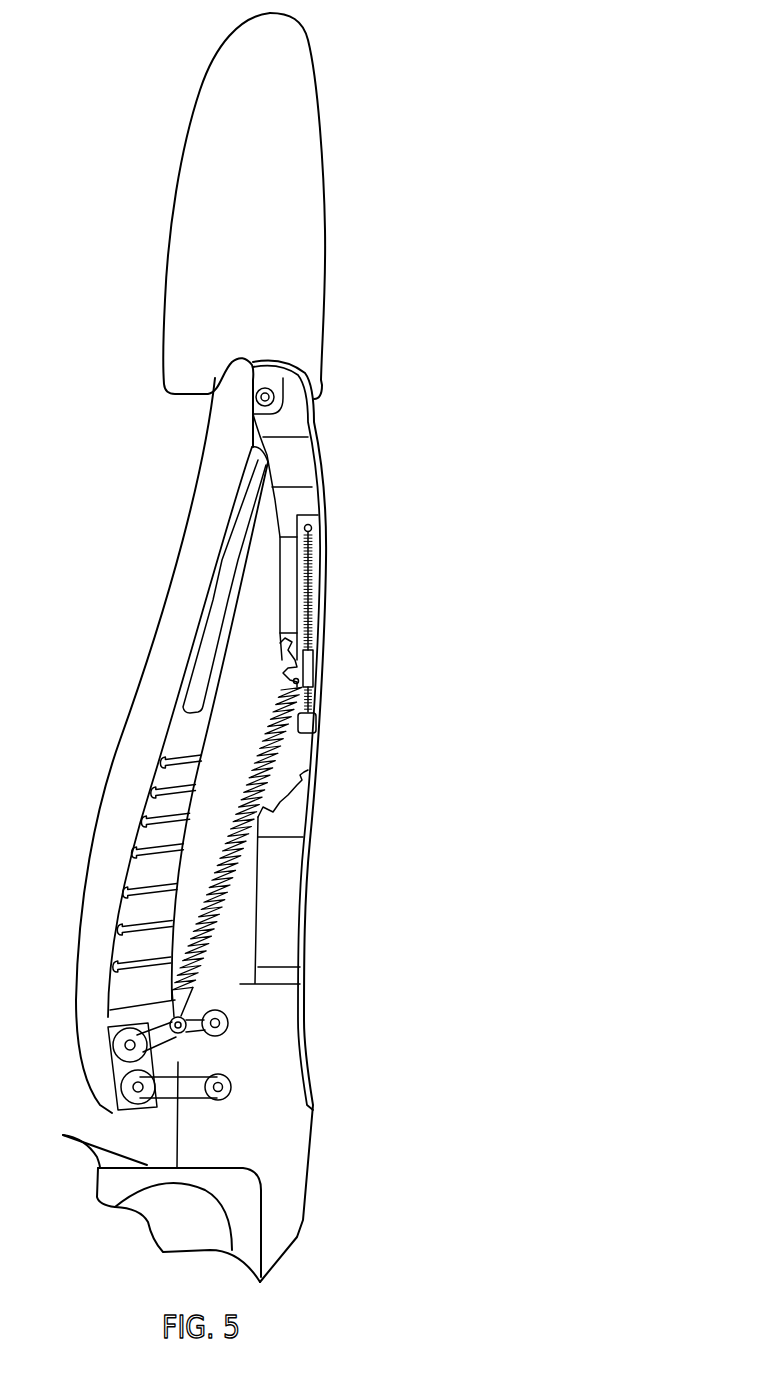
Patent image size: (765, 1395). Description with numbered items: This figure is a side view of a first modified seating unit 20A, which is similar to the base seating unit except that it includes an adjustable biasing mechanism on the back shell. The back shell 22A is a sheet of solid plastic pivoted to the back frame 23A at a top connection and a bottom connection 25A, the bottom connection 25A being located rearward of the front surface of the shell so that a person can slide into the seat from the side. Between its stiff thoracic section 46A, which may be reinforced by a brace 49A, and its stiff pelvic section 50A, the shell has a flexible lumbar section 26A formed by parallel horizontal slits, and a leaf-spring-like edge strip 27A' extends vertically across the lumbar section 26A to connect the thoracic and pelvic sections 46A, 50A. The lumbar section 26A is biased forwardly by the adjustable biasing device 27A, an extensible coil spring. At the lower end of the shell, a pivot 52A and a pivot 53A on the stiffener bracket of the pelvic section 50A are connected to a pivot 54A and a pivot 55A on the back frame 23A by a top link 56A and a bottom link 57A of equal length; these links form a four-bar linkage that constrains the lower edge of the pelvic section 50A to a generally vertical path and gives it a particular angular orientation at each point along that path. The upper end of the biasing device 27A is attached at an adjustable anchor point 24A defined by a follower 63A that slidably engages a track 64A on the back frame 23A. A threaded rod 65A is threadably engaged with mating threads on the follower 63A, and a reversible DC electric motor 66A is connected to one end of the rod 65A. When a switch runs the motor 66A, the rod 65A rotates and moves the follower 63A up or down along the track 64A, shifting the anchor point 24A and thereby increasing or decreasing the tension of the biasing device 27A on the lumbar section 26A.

The seating unit 20A is at (128, 593).
The back shell 22A is at (174, 750).
The back frame 23A is at (324, 427).
The adjustable anchor point 24A is at (272, 390).
The bottom connection 25A is at (265, 1063).
The lumbar section 26A is at (155, 838).
The adjustable biasing device 27A is at (287, 852).
The edge strip 27A' is at (267, 656).
The thoracic section 46A is at (250, 567).
The brace 49A is at (195, 684).
The pelvic section 50A is at (104, 1070).
The pivot 52A is at (128, 1028).
The pivot 53A is at (137, 1089).
The pivot 54A is at (214, 1014).
The pivot 55A is at (228, 1088).
The top link 56A is at (197, 1033).
The bottom link 57A is at (197, 1090).
The follower 63A is at (313, 668).
The track 64A is at (312, 601).
The threaded rod 65A is at (310, 560).
The reversible DC electric motor 66A is at (316, 722).